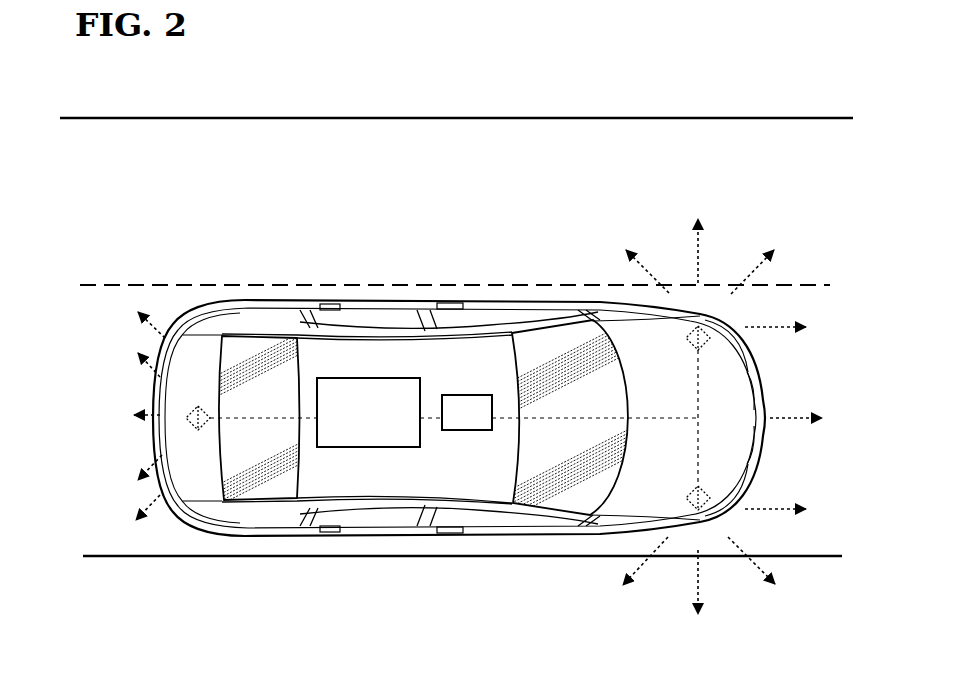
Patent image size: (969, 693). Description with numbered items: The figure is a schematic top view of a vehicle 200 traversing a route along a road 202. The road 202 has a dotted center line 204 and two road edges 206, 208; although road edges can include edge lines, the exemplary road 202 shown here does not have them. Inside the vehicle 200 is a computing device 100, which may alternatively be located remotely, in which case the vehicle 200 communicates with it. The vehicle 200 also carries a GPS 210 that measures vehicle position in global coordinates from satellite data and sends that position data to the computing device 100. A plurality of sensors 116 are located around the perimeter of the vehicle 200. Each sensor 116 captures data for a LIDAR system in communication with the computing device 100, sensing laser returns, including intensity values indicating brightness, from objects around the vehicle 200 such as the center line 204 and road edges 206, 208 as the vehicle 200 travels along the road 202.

The computing device 100 is at (380, 448).
The sensors 116 is at (192, 410).
The vehicle 200 is at (422, 302).
The road 202 is at (653, 104).
The center line 204 is at (125, 283).
The road edge 206 is at (262, 118).
The road edge 208 is at (118, 557).
The GPS 210 is at (460, 395).